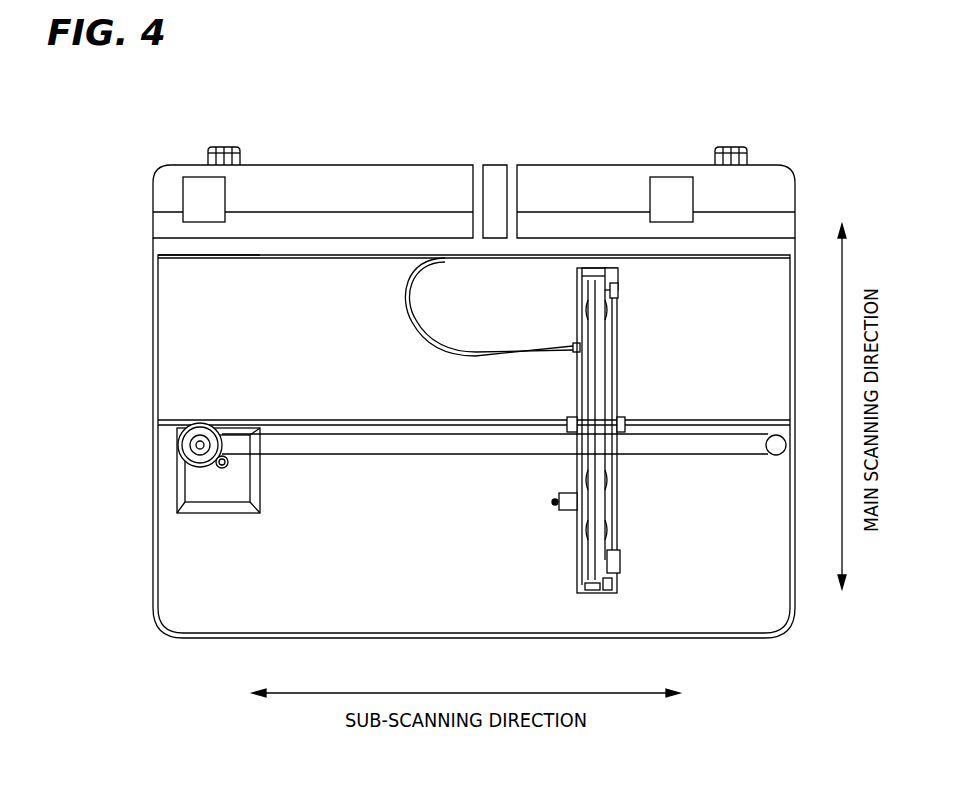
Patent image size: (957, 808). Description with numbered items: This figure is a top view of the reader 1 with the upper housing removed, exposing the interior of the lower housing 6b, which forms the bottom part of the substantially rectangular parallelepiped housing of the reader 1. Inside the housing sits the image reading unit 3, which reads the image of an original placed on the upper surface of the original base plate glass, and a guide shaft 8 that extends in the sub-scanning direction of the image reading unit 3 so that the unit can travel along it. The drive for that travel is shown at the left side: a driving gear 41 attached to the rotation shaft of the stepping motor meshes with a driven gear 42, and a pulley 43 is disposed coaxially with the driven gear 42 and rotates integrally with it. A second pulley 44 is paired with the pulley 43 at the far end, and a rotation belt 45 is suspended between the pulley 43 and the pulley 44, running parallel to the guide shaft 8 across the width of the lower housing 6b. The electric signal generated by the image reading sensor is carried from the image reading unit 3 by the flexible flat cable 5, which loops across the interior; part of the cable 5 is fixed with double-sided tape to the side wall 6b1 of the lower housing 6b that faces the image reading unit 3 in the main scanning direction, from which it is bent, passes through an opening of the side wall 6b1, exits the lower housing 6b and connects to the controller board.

The reader 1 is at (389, 155).
The image reading unit 3 is at (622, 530).
The flexible flat cable 5 is at (410, 318).
The lower housing 6b is at (153, 570).
The side wall 6b1 is at (213, 255).
The guide shaft 8 is at (708, 420).
The driving gear 41 is at (224, 470).
The driven gear 42 is at (190, 453).
The pulley 43 is at (202, 438).
The pulley 44 is at (776, 455).
The rotation belt 45 is at (335, 456).